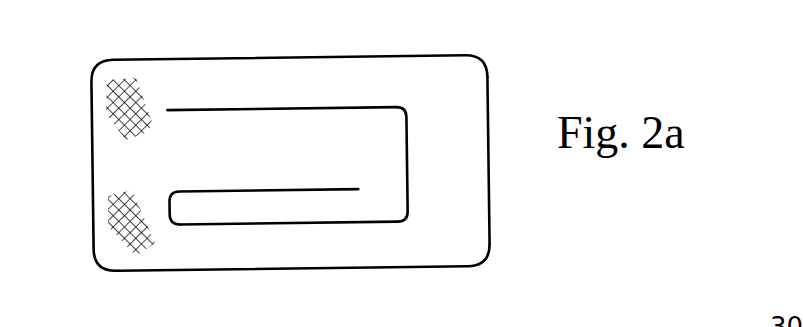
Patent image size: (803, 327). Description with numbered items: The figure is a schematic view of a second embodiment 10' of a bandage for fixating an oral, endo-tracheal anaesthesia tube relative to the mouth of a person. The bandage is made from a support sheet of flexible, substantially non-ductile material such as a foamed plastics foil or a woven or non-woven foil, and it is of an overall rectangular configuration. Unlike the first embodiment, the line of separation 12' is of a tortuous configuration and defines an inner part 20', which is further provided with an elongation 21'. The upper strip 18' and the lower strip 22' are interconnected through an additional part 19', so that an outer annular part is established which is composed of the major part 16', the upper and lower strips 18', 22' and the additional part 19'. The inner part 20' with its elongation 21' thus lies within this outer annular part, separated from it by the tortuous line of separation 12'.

The bandage (second embodiment) 10' is at (296, 167).
The line of separation 12' is at (281, 61).
The major part 16' is at (94, 167).
The upper strip 18' is at (290, 142).
The additional part 19' is at (511, 160).
The inner part 20' is at (292, 216).
The elongation 21' is at (263, 258).
The lower strip 22' is at (304, 285).